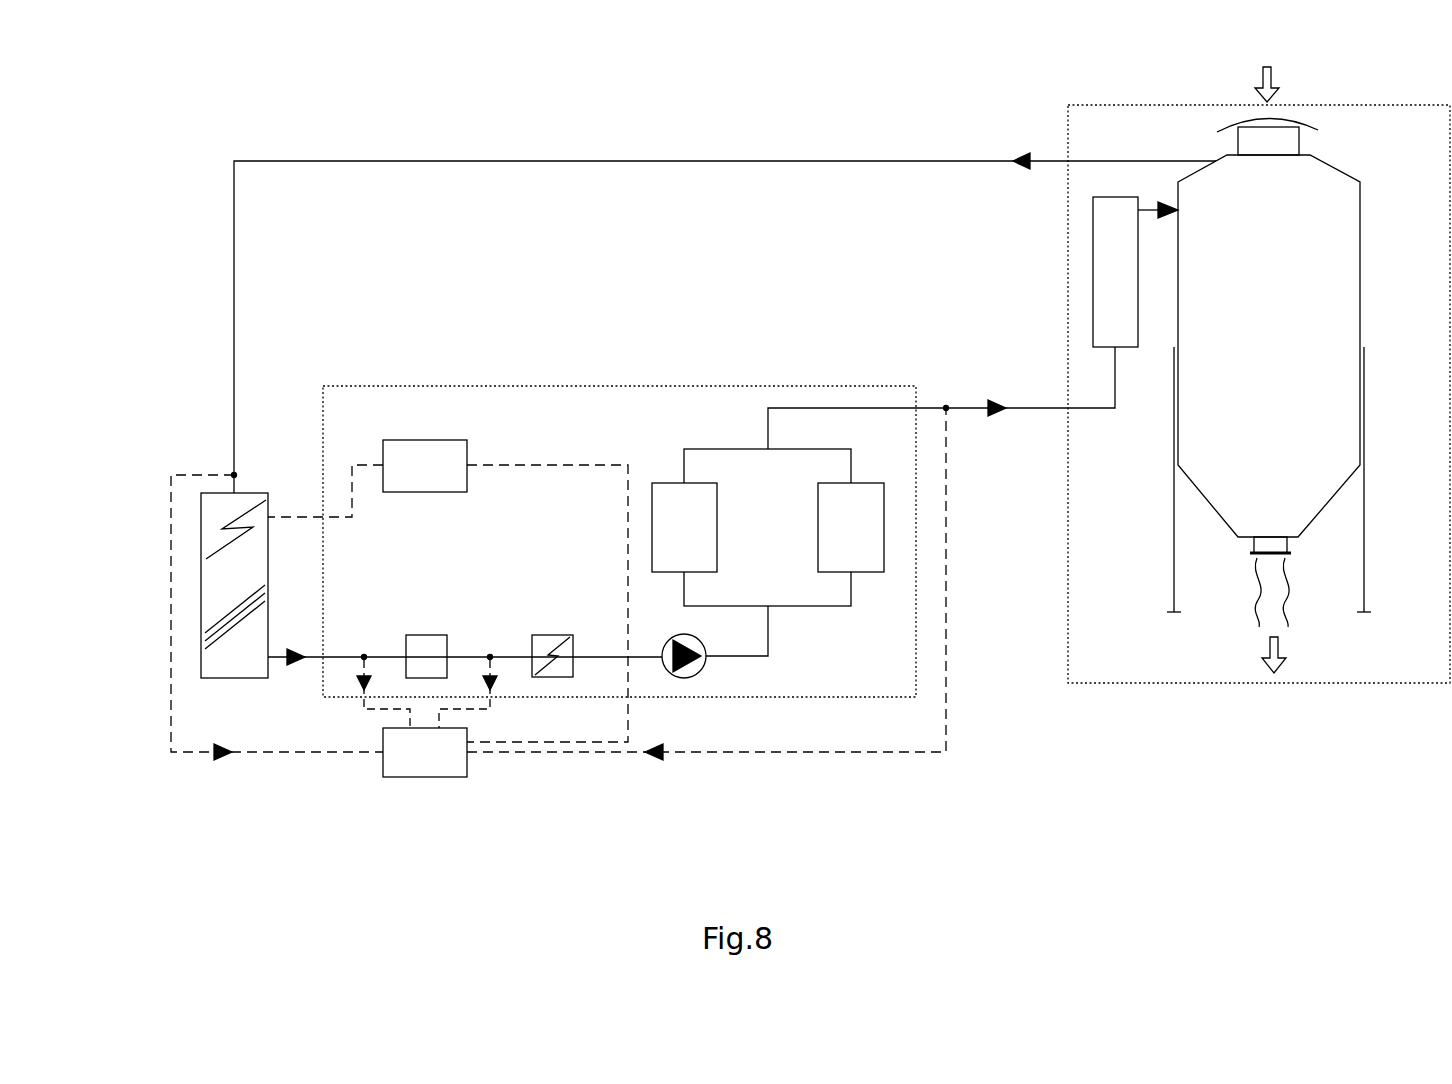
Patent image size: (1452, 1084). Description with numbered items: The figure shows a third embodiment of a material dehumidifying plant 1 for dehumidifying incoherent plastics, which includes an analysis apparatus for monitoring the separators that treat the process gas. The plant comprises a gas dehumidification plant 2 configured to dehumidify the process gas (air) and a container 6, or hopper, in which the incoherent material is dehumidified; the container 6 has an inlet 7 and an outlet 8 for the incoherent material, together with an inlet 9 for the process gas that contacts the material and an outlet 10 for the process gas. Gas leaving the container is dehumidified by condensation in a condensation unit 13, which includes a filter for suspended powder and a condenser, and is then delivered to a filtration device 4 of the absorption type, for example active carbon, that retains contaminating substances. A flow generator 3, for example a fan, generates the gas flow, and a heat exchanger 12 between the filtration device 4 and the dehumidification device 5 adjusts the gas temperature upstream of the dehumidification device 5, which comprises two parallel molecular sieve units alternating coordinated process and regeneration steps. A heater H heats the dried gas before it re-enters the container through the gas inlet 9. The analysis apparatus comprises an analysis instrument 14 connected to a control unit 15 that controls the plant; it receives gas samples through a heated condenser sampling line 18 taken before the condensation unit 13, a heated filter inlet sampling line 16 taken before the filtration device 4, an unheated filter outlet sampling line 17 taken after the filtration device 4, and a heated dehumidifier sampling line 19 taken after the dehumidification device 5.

The material dehumidifying plant 1 is at (185, 118).
The gas dehumidification plant 2 is at (631, 370).
The flow generator 3 is at (697, 674).
The filtration device 4 is at (427, 635).
The dehumidification device 5 is at (693, 543).
The container 6 is at (1277, 331).
The inlet of the incoherent material 7 is at (1300, 140).
The outlet of the incoherent material 8 is at (1290, 545).
The inlet of the process gas 9 is at (1172, 210).
The outlet of the process gas 10 is at (889, 161).
The heat exchanger 12 is at (552, 635).
The condensation unit 13 is at (201, 540).
The analysis instrument 14 is at (425, 777).
The control unit 15 is at (428, 440).
The filter inlet sampling line 16 is at (370, 710).
The filter outlet sampling line 17 is at (465, 715).
The condenser sampling line 18 is at (171, 697).
The dehumidifier sampling line 19 is at (946, 700).
The heater H is at (1093, 265).